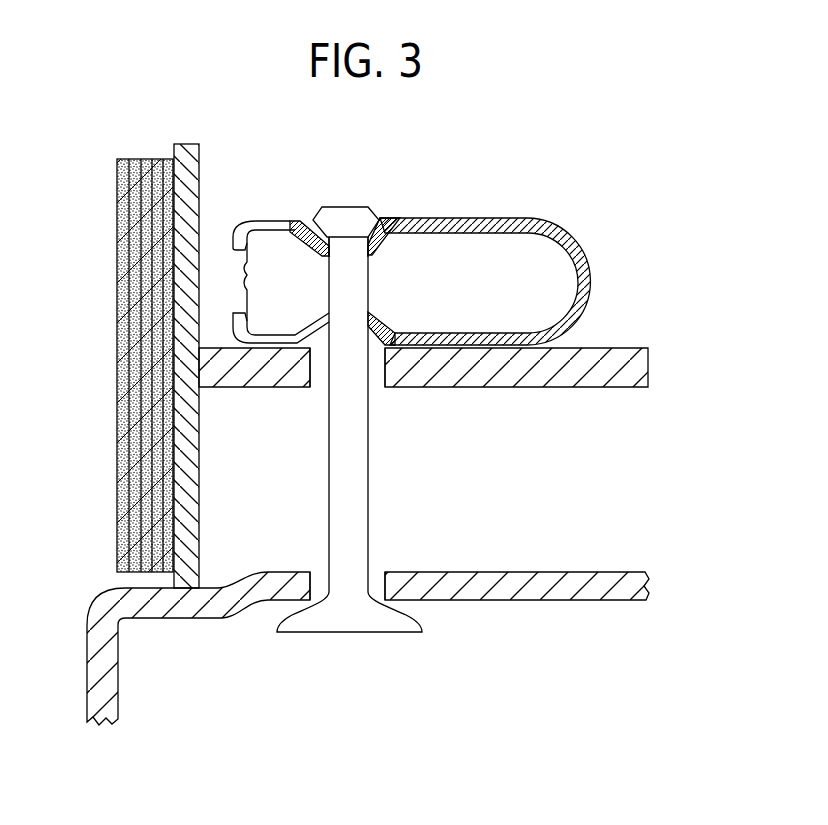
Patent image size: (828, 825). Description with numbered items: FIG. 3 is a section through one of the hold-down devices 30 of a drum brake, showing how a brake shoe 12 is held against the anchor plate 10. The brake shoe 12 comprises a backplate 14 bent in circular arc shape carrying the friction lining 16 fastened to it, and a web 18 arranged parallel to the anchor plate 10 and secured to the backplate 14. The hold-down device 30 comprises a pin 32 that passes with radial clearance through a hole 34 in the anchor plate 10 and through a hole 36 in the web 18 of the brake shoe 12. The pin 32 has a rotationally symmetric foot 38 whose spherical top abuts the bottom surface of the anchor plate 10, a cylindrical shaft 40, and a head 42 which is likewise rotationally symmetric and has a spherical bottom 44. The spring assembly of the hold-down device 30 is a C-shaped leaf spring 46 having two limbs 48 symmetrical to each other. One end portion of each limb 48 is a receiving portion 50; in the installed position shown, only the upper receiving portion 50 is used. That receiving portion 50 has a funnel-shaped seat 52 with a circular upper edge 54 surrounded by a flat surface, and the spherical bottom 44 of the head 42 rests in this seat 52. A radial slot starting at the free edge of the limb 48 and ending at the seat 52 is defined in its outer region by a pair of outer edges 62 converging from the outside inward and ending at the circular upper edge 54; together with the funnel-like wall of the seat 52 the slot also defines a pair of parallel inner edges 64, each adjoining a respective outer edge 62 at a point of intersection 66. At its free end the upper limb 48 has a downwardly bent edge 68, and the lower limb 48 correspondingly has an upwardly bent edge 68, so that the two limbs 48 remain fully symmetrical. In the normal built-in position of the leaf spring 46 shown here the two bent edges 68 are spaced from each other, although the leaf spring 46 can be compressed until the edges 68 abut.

The anchor plate 10 is at (568, 584).
The brake shoe 12 is at (110, 365).
The backplate 14 is at (178, 480).
The friction lining 16 is at (130, 477).
The web 18 is at (600, 367).
The hold-down device 30 is at (416, 229).
The pin 32 is at (360, 416).
The hole in the anchor plate 34 is at (380, 575).
The hole in the web 36 is at (378, 372).
The foot 38 is at (383, 613).
The cylindrical shaft 40 is at (345, 493).
The head 42 is at (349, 222).
The spherical bottom 44 is at (315, 255).
The C-shaped leaf spring 46 is at (492, 256).
The limb 48 is at (478, 222).
The receiving portion 50 is at (293, 195).
The funnel-shaped seat 52 is at (382, 237).
The circular upper edge 54 is at (388, 213).
The outer edge 62 is at (273, 248).
The inner edge 64 is at (300, 225).
The point of intersection 66 is at (283, 222).
The bent edge 68 is at (286, 282).